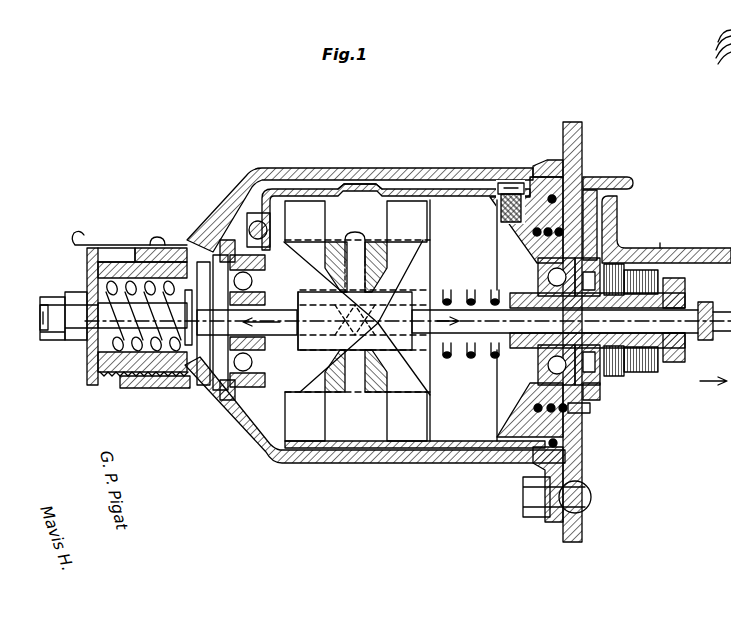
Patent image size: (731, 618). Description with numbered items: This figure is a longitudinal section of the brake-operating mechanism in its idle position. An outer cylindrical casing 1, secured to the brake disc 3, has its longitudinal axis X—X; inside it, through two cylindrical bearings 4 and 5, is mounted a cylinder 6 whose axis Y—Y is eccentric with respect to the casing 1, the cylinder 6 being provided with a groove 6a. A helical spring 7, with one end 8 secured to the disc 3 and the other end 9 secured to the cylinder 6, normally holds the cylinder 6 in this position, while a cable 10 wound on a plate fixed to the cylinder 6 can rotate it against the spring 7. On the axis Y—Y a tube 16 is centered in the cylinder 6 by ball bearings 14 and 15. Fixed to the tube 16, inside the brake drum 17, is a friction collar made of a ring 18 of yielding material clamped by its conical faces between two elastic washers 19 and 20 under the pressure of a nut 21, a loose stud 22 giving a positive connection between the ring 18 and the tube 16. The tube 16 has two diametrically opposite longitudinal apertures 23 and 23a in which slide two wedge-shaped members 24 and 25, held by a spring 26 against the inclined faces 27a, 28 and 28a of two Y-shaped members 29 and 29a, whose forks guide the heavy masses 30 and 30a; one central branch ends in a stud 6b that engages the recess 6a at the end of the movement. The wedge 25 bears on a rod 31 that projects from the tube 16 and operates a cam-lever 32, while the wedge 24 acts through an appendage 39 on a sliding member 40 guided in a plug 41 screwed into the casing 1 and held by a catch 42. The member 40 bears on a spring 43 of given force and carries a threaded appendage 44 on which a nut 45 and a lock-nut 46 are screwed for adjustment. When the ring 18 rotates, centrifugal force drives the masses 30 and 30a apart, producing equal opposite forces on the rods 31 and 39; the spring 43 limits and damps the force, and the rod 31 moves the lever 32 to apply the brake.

The outer cylindrical casing 1 is at (392, 171).
The brake disc 3 is at (576, 131).
The cylindrical bearing 4 is at (537, 177).
The cylindrical bearing 5 is at (227, 243).
The cylinder 6 is at (344, 185).
The groove 6a is at (373, 187).
The stud 6b is at (340, 235).
The helical spring 7 is at (564, 233).
The spring end 8 is at (591, 407).
The spring end 9 is at (520, 212).
The cable 10 is at (556, 197).
The ball bearing 14 is at (540, 271).
The ball bearing 15 is at (266, 274).
The tube 16 is at (262, 303).
The brake drum 17 is at (670, 252).
The ring 18 is at (639, 262).
The washer 19 is at (609, 360).
The washer 20 is at (672, 286).
The nut 21 is at (357, 316).
The stud 22 is at (660, 246).
The longitudinal aperture 23 is at (470, 290).
The longitudinal aperture 23a is at (466, 357).
The wedge-shaped member 24 is at (310, 353).
The wedge-shaped member 25 is at (392, 352).
The spring 26 is at (447, 290).
The inclined face 27a is at (333, 345).
The inclined face 28 is at (412, 287).
The inclined face 28a is at (396, 322).
The Y-shaped member 29 is at (318, 217).
The Y-shaped member 29a is at (318, 426).
The heavy mass 30 is at (388, 395).
The heavy mass 30a is at (386, 240).
The rod 31 is at (571, 314).
The cam-lever 32 is at (708, 303).
The appendage 39 is at (205, 332).
The sliding member 40 is at (184, 285).
The plug 41 is at (126, 374).
The catch 42 is at (123, 243).
The spring 43 is at (118, 344).
The appendage 44 is at (97, 318).
The nut 45 is at (78, 298).
The lock-nut 46 is at (47, 300).